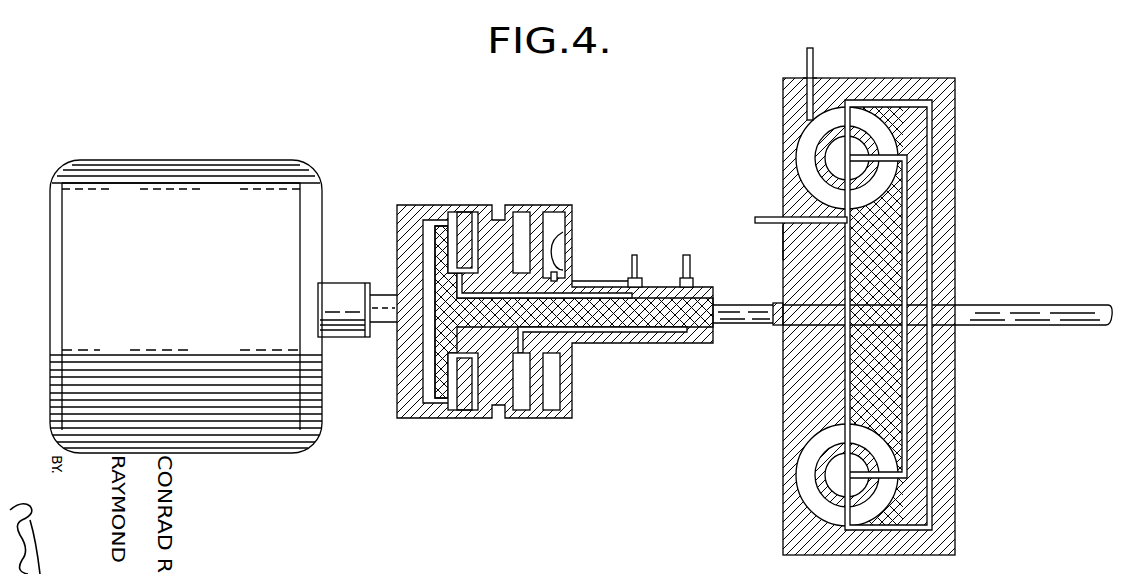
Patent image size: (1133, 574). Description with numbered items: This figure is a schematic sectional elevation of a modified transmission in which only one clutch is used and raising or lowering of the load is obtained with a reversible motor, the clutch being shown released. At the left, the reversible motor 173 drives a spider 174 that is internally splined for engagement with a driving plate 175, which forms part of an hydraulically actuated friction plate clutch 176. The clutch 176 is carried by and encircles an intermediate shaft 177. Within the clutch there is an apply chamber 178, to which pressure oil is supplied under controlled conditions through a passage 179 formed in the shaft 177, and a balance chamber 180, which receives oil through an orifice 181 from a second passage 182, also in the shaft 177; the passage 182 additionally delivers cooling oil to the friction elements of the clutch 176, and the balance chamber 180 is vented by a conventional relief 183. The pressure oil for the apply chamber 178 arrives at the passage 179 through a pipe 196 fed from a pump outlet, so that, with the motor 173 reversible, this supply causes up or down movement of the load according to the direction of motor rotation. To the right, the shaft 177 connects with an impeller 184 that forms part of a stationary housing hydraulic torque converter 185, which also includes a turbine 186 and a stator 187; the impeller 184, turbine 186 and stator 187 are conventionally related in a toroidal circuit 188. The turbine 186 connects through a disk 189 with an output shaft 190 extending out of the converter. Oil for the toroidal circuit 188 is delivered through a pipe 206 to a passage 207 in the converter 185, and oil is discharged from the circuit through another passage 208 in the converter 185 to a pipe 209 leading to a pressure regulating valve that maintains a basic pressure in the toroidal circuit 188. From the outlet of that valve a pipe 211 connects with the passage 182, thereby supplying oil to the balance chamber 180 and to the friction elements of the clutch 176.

The reversible motor 173 is at (215, 337).
The spider 174 is at (402, 204).
The driving plate 175 is at (467, 212).
The friction plate clutch 176 is at (531, 203).
The intermediate shaft 177 is at (607, 343).
The apply chamber 178 is at (518, 398).
The passage 179 is at (652, 329).
The balance chamber 180 is at (551, 222).
The orifice 181 is at (568, 280).
The passage 182 is at (615, 292).
The relief 183 is at (565, 233).
The impeller 184 is at (873, 220).
The hydraulic torque converter 185 is at (860, 291).
The turbine 186 is at (888, 108).
The stator 187 is at (785, 158).
The toroidal circuit 188 is at (813, 137).
The disk 189 is at (918, 206).
The output shaft 190 is at (1010, 303).
The pipe 196 is at (687, 256).
The pipe 206 is at (763, 217).
The passage 207 is at (788, 241).
The passage 208 is at (807, 90).
The pipe 209 is at (807, 52).
The pipe 211 is at (635, 256).